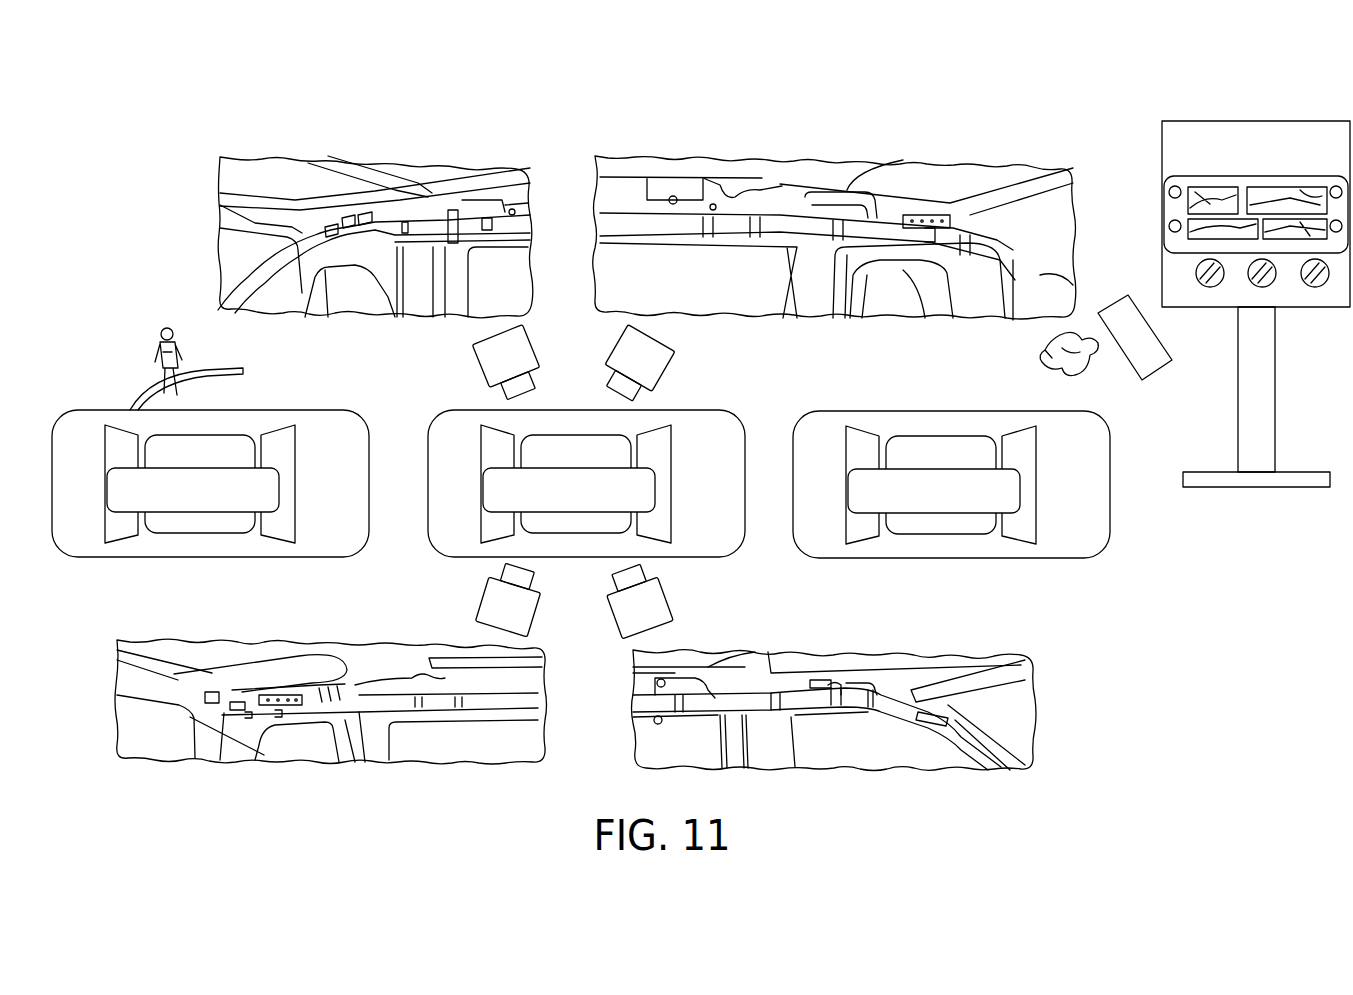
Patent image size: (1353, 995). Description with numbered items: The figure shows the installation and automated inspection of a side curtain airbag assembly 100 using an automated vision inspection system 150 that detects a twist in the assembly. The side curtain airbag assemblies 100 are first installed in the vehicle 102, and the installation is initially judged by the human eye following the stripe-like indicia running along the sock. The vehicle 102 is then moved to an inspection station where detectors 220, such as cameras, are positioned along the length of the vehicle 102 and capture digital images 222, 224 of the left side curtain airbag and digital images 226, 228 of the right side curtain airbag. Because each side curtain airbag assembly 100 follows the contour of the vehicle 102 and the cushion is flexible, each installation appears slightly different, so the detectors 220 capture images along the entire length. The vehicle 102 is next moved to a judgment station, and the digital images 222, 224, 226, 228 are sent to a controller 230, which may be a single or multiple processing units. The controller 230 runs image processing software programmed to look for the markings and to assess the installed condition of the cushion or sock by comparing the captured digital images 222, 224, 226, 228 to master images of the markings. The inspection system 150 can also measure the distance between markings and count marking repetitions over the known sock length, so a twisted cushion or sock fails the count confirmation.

The side curtain airbag assembly 100 is at (305, 228).
The vehicle 102 is at (292, 410).
The automated vision inspection system 150 is at (1118, 628).
The detector 220 is at (488, 367).
The digital image 222 is at (439, 171).
The digital image 224 is at (962, 170).
The digital image 226 is at (372, 765).
The digital image 228 is at (888, 775).
The controller 230 is at (1265, 108).